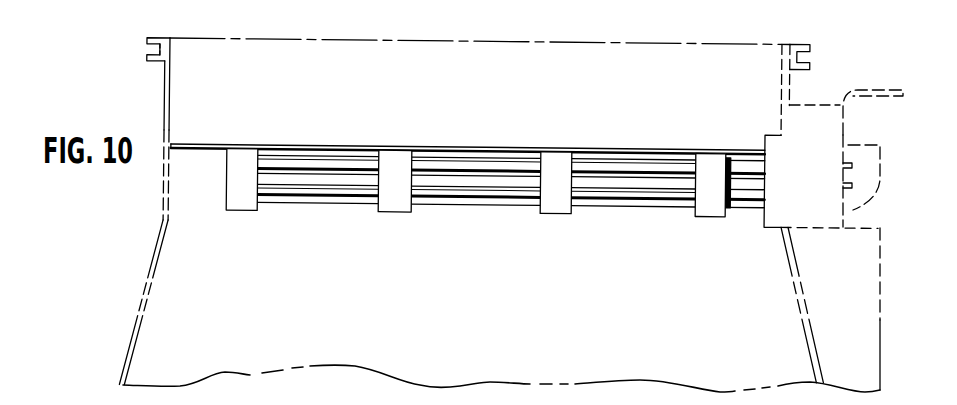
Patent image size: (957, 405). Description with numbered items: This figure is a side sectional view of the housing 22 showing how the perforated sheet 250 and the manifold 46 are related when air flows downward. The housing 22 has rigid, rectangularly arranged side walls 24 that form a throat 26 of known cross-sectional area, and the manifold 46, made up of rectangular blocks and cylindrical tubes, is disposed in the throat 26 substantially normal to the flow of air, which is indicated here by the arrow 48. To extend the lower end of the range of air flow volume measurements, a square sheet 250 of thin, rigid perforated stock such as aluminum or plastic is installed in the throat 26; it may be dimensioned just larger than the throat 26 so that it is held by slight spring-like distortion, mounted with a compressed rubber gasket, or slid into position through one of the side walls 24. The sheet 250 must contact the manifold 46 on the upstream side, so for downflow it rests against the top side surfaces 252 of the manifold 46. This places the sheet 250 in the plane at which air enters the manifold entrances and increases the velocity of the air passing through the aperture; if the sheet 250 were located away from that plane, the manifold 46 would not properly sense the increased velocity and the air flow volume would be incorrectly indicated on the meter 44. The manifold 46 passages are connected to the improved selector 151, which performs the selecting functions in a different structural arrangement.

The housing 22 is at (168, 87).
The side walls 24 is at (163, 175).
The throat 26 is at (352, 87).
The air flow velocity meter 44 is at (865, 223).
The manifold 46 is at (248, 222).
The arrow indicating downflow of air 48 is at (490, 65).
The selector 151 is at (850, 134).
The sheet of perforated stock 250 is at (207, 144).
The top side surfaces 252 is at (247, 149).